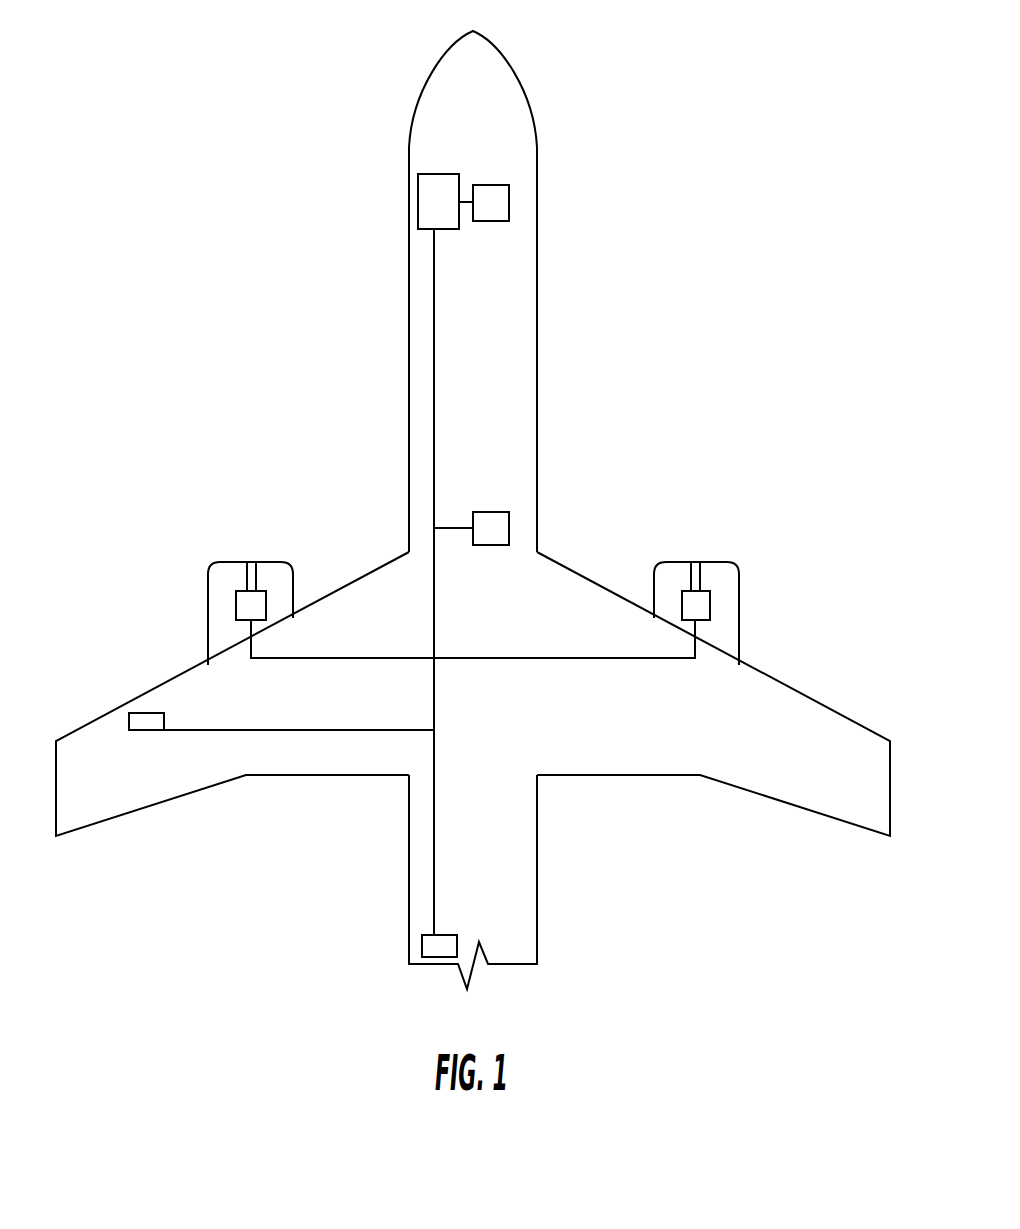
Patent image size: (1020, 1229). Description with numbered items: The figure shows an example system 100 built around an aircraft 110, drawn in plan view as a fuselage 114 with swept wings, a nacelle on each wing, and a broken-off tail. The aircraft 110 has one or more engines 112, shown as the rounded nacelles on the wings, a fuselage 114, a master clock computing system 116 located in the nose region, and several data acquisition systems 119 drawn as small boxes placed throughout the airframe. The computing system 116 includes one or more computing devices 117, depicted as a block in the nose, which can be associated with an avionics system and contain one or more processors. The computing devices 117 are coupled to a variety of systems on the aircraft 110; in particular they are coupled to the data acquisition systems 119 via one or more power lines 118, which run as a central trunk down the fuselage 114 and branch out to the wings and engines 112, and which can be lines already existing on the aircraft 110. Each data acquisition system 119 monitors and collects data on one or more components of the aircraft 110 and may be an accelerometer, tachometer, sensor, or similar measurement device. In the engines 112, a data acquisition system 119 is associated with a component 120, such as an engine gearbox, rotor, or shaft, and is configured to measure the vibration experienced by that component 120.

The system 100 is at (182, 140).
The aircraft 110 is at (603, 317).
The engine 112 is at (247, 560).
The fuselage 114 is at (517, 428).
The master clock computing system 116 is at (443, 156).
The computing device 117 is at (422, 208).
The power line 118 is at (434, 388).
The data acquisition system 119 is at (505, 204).
The component 120 is at (257, 578).